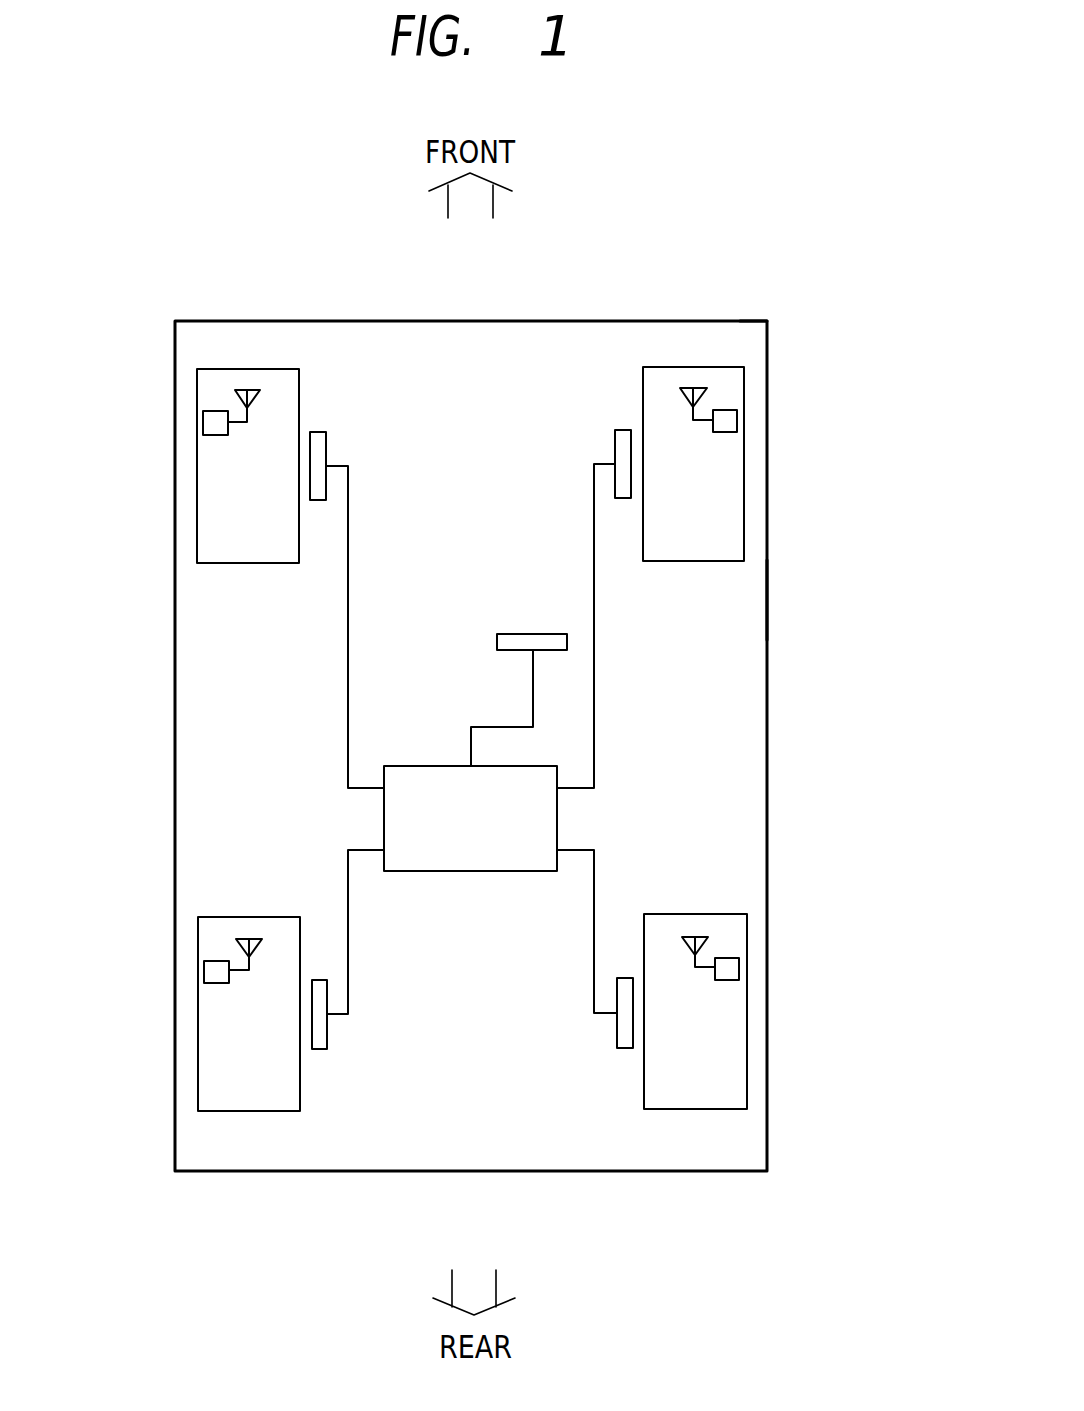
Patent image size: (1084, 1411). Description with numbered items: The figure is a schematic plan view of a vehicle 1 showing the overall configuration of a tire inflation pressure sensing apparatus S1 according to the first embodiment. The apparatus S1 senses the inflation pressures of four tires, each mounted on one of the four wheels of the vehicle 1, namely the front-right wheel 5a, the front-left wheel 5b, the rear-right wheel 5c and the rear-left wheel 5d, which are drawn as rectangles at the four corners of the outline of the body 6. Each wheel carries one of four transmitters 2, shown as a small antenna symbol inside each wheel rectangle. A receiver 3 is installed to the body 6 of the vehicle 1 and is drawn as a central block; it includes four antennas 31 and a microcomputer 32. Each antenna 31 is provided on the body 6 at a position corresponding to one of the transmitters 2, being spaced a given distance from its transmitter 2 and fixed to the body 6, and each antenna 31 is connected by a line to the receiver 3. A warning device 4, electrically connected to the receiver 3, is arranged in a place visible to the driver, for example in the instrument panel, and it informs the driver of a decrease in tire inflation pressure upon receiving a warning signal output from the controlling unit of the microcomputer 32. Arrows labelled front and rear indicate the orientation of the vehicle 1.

The vehicle 1 is at (767, 656).
The tire inflation pressure sensing apparatus S1 is at (798, 290).
The body 6 is at (768, 600).
The transmitter 2 is at (203, 421).
The receiver 3 is at (435, 872).
The antenna 31 is at (318, 432).
The microcomputer 32 is at (541, 872).
The warning device 4 is at (553, 651).
The front-right wheel 5a is at (745, 503).
The front-left wheel 5b is at (197, 503).
The rear-right wheel 5c is at (747, 1073).
The rear-left wheel 5d is at (198, 1058).